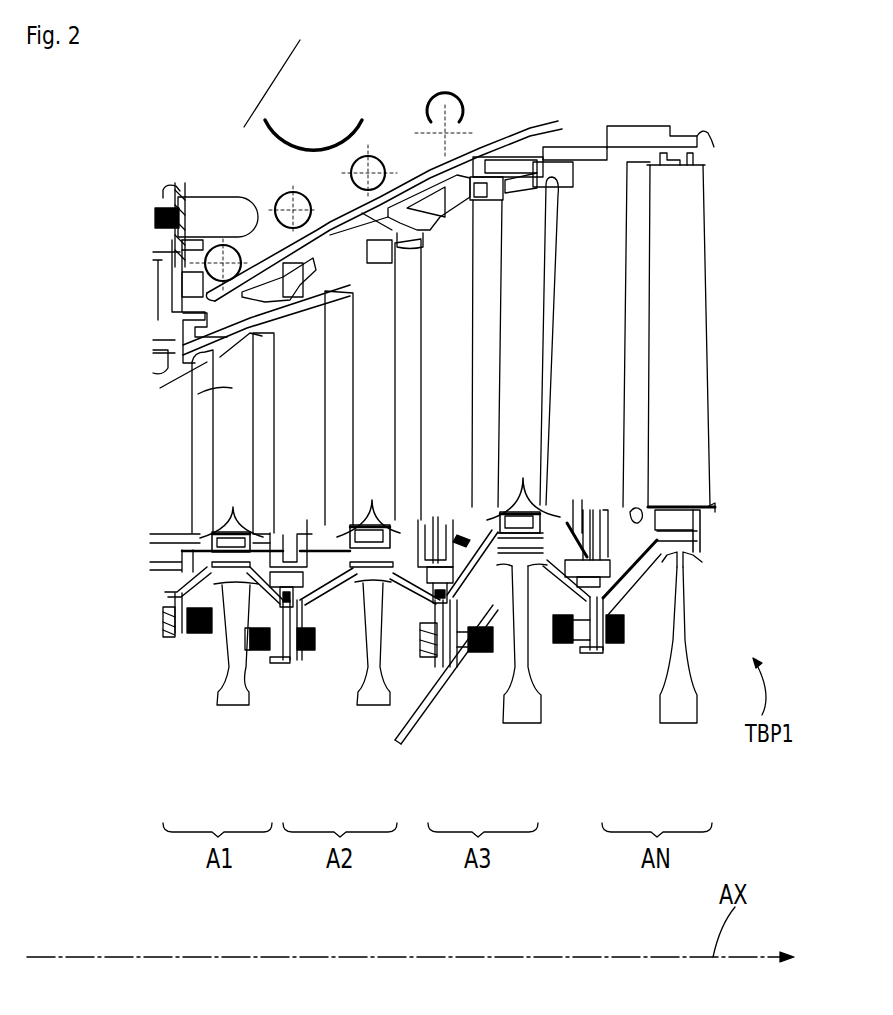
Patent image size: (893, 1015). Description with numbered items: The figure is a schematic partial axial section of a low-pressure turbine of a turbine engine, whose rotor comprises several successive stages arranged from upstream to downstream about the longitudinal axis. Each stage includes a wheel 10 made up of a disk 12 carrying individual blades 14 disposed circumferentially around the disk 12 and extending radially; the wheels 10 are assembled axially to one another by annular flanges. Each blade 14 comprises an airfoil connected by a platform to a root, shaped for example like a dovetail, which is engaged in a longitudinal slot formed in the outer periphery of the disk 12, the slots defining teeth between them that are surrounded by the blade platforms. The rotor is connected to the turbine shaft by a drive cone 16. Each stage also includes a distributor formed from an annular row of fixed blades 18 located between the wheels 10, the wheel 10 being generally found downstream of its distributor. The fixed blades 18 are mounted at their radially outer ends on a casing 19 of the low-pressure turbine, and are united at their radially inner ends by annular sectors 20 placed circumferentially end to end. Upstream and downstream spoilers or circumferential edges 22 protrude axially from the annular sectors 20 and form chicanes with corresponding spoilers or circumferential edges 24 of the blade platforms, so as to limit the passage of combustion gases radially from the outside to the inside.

The wheel 10 is at (212, 703).
The disk 12 is at (228, 710).
The blade 14 is at (240, 388).
The drive cone 16 is at (427, 705).
The fixed blade 18 is at (170, 484).
The casing 19 is at (428, 120).
The annular sector 20 is at (300, 597).
The spoiler or circumferential edge 22 is at (307, 527).
The spoiler or circumferential edge 24 is at (233, 507).